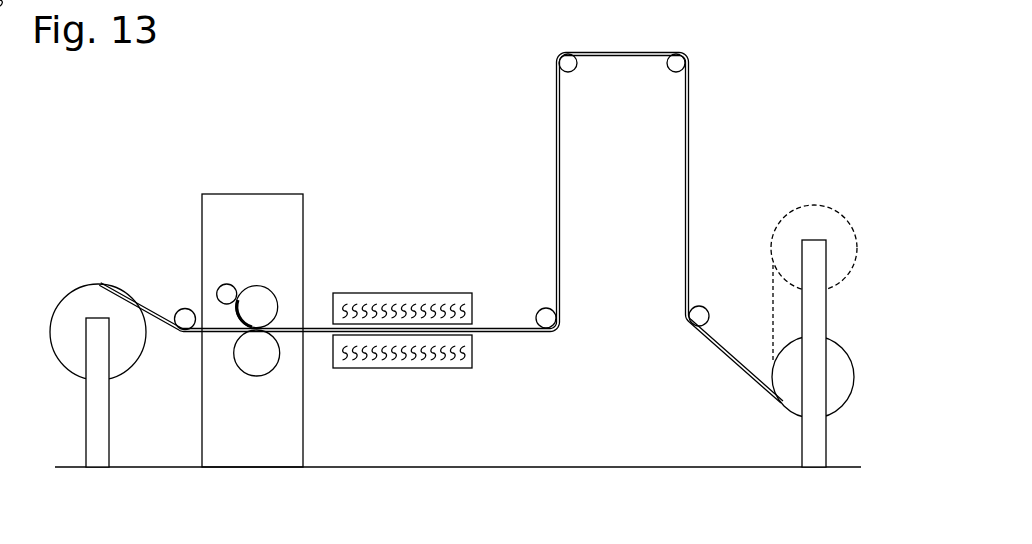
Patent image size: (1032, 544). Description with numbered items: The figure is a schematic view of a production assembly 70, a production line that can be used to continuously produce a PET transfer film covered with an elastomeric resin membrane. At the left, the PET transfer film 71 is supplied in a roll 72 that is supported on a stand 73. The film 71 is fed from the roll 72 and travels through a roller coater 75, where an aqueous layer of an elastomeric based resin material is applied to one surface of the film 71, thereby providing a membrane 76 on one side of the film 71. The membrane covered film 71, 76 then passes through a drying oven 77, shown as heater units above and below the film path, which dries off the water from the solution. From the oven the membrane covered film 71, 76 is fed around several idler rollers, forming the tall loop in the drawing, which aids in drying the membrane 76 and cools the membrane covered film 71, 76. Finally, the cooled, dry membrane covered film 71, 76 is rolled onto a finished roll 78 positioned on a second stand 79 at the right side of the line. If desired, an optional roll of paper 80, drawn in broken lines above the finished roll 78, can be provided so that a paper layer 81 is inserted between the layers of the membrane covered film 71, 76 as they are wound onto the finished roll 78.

The production assembly 70 is at (392, 127).
The PET transfer film 71 is at (155, 308).
The roll 72 is at (90, 290).
The stand 73 is at (90, 413).
The roller coater 75 is at (267, 238).
The membrane 76 is at (318, 327).
The drying oven 77 is at (402, 298).
The finished roll 78 is at (843, 363).
The second stand 79 is at (815, 442).
The roll of paper 80 is at (842, 237).
The paper layer 81 is at (768, 300).